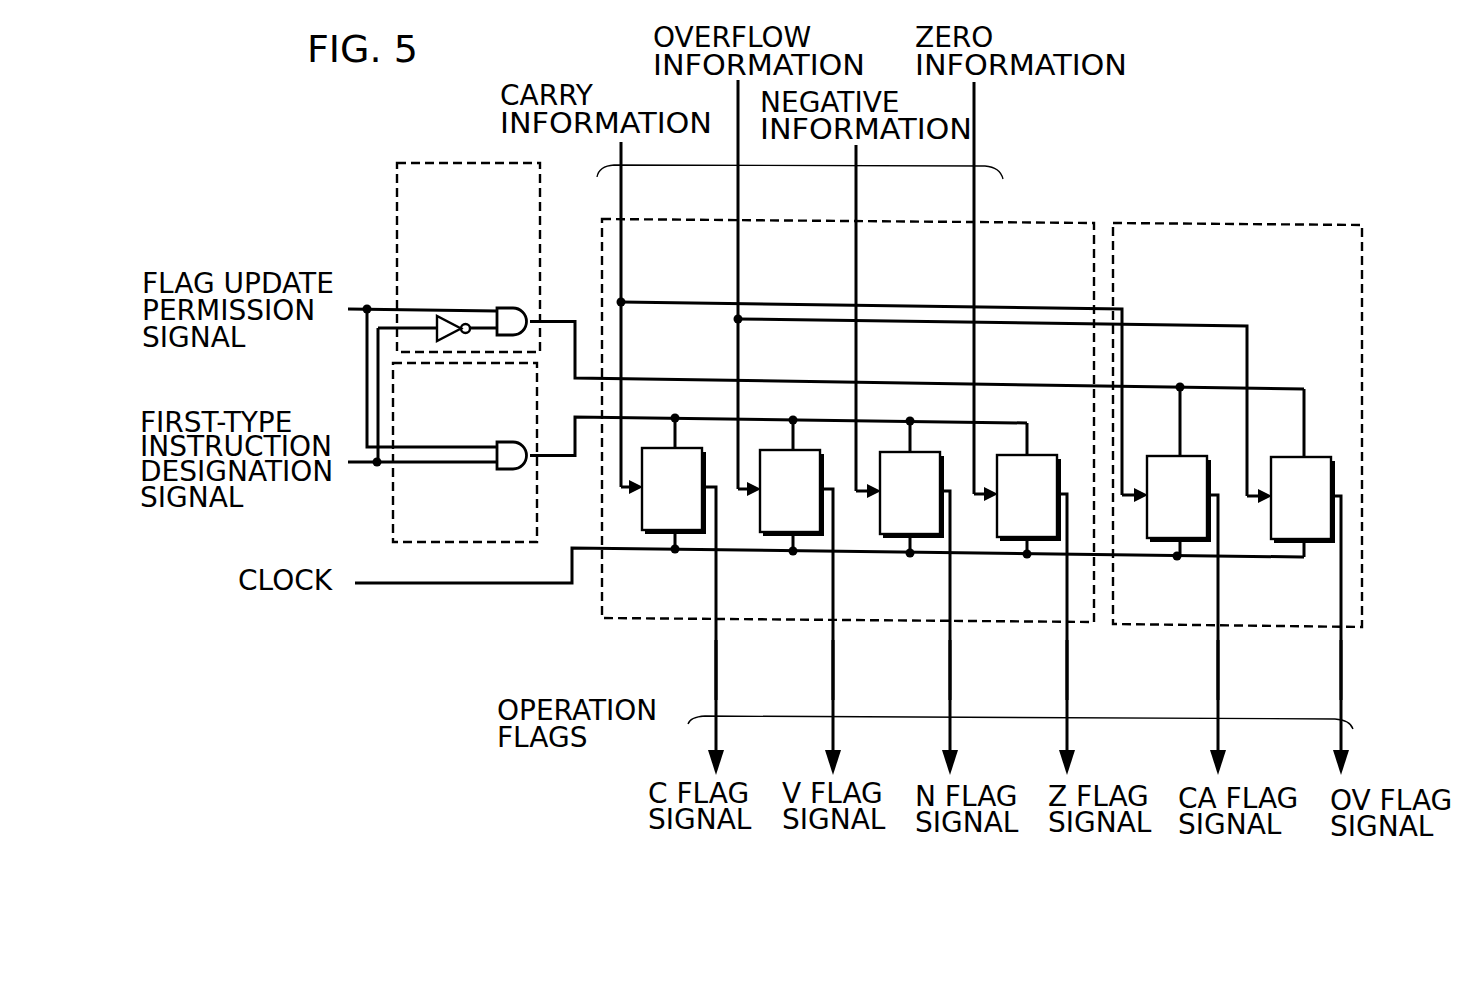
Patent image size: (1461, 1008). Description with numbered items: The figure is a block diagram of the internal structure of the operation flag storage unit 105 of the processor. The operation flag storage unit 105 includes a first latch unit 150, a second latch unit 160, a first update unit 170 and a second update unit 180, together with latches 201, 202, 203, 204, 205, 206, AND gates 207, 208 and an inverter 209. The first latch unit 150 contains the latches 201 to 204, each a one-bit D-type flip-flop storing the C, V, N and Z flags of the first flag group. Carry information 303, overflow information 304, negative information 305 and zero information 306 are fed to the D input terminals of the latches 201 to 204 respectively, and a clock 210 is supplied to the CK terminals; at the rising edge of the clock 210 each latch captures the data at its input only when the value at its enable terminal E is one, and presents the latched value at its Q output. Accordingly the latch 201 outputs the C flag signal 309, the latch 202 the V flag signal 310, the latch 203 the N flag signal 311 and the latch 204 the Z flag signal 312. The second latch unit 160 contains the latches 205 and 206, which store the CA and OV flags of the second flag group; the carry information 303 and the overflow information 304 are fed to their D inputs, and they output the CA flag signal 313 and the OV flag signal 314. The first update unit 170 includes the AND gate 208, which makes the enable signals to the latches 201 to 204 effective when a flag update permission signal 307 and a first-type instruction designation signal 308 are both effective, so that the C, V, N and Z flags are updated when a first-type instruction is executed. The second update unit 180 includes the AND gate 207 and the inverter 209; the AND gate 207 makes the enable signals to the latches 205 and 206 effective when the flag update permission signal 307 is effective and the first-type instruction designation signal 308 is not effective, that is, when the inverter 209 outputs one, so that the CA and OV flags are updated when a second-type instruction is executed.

The operation flag storage unit 105 is at (1268, 107).
The first latch unit 150 is at (1003, 221).
The second latch unit 160 is at (1268, 223).
The first update unit 170 is at (536, 494).
The second update unit 180 is at (443, 162).
The latch 201 is at (658, 540).
The latch 202 is at (776, 542).
The latch 203 is at (893, 544).
The latch 204 is at (1010, 546).
The latch 205 is at (1160, 547).
The latch 206 is at (1285, 548).
The AND gate 207 is at (512, 308).
The AND gate 208 is at (512, 471).
The inverter 209 is at (437, 318).
The clock 210 is at (397, 588).
The carry information 303 is at (620, 210).
The overflow information 304 is at (738, 213).
The negative information 305 is at (856, 213).
The zero information 306 is at (974, 213).
The flag update permission signal 307 is at (367, 304).
The first-type instruction designation signal 308 is at (376, 467).
The C flag signal 309 is at (712, 645).
The V flag signal 310 is at (829, 645).
The N flag signal 311 is at (946, 648).
The Z flag signal 312 is at (1063, 648).
The CA flag signal 313 is at (1214, 652).
The OV flag signal 314 is at (1337, 652).